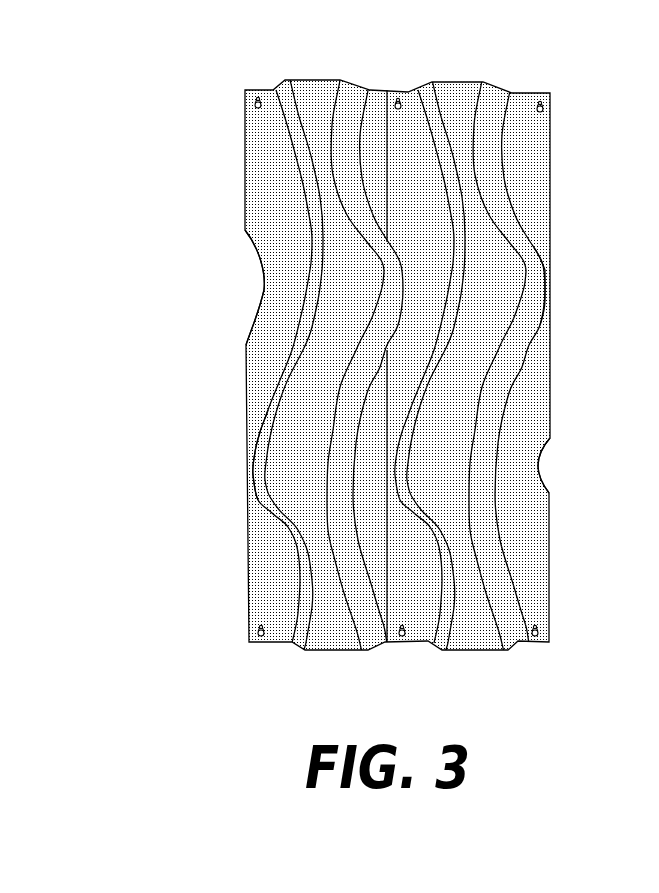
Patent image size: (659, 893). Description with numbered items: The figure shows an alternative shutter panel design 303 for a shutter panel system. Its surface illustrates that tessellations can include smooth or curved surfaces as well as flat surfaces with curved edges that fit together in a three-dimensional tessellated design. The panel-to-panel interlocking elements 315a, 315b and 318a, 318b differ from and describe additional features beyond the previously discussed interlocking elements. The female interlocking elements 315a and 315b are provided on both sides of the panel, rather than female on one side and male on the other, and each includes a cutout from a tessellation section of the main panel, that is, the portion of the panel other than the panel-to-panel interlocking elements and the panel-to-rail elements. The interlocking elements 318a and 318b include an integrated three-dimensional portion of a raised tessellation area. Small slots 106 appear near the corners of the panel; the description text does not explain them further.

The shutter panel design 303 is at (255, 53).
The mounting keyhole slot 106 is at (547, 100).
The female interlocking element 315a is at (234, 278).
The female interlocking element 315b is at (564, 448).
The interlocking element 318a is at (548, 276).
The interlocking element 318b is at (251, 443).